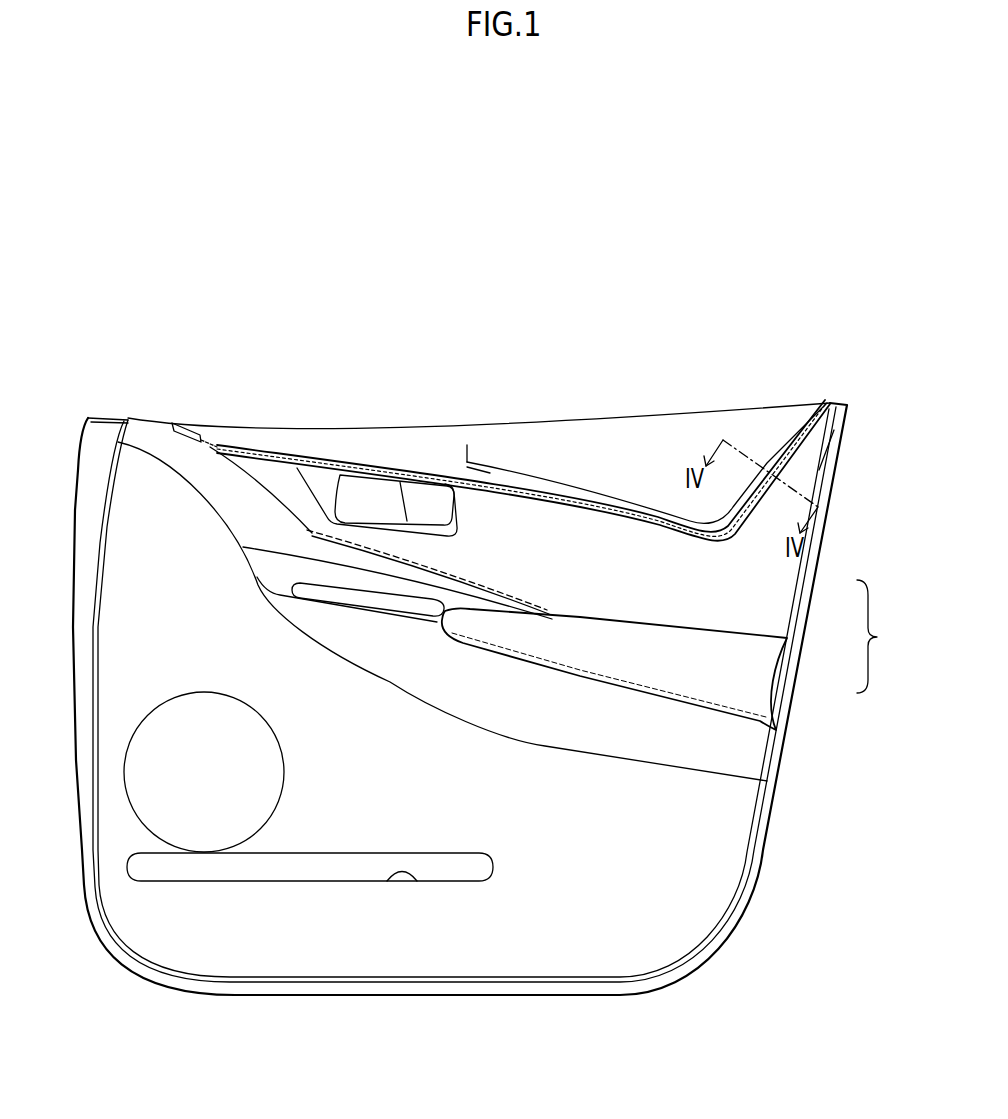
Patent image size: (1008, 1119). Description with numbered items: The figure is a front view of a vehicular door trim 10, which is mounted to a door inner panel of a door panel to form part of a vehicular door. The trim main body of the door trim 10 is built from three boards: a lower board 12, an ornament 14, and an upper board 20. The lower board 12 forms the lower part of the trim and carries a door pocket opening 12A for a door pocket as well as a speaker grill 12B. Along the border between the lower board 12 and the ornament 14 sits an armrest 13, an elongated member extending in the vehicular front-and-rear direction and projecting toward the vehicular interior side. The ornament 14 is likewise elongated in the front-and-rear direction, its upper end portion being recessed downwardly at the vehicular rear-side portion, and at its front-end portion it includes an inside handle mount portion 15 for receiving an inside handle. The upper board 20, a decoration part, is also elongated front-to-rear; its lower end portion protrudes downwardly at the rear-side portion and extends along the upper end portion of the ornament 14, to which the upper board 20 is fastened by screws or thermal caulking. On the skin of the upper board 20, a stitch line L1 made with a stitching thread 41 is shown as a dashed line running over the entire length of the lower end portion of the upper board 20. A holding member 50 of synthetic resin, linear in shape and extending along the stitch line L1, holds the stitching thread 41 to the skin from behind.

The vehicular door trim 10 is at (163, 399).
The lower board 12 is at (690, 804).
The door pocket opening 12A is at (416, 882).
The speaker grill 12B is at (213, 826).
The armrest 13 is at (571, 690).
The ornament 14 is at (770, 617).
The inside handle mount portion 15 is at (322, 483).
The upper board 20 is at (717, 507).
The stitching thread 41 is at (801, 430).
The holding member 50 is at (787, 466).
The stitch line L1 is at (781, 457).